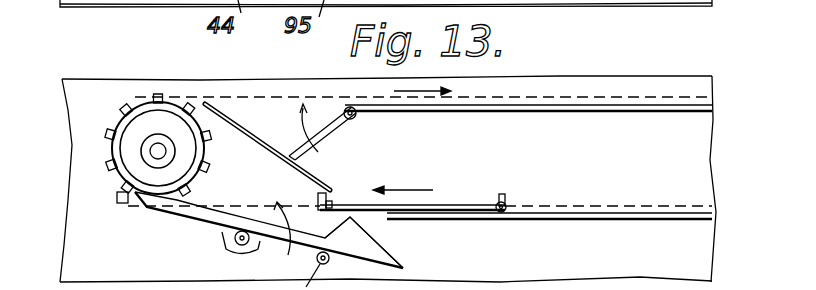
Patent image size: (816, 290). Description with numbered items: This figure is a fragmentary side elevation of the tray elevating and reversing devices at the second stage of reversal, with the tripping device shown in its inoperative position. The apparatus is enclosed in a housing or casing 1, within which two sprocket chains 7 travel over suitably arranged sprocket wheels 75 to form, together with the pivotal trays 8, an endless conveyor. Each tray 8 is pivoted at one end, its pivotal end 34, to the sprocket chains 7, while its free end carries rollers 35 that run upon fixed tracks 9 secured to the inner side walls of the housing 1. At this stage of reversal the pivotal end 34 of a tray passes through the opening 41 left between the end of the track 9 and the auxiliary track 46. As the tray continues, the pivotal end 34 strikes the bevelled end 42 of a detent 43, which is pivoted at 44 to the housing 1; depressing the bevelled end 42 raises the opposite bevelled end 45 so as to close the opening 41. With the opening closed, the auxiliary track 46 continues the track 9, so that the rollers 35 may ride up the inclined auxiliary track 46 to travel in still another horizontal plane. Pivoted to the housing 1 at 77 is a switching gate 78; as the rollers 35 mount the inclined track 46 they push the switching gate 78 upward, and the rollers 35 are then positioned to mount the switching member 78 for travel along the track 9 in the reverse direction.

The housing or casing 1 is at (704, 40).
The sprocket chains 7 is at (112, 118).
The pivotal trays 8 is at (451, 191).
The tracks 9 is at (604, 109).
The pivotal end 34 is at (334, 202).
The rollers 35 is at (494, 198).
The opening 41 is at (334, 200).
The bevelled end 42 is at (145, 198).
The detent 43 is at (185, 210).
The pivot 44 is at (234, 243).
The bevelled end 45 is at (386, 246).
The auxiliary track 46 is at (267, 147).
The sprocket wheels 75 is at (147, 122).
The pivot 77 is at (357, 115).
The switching gate 78 is at (327, 118).